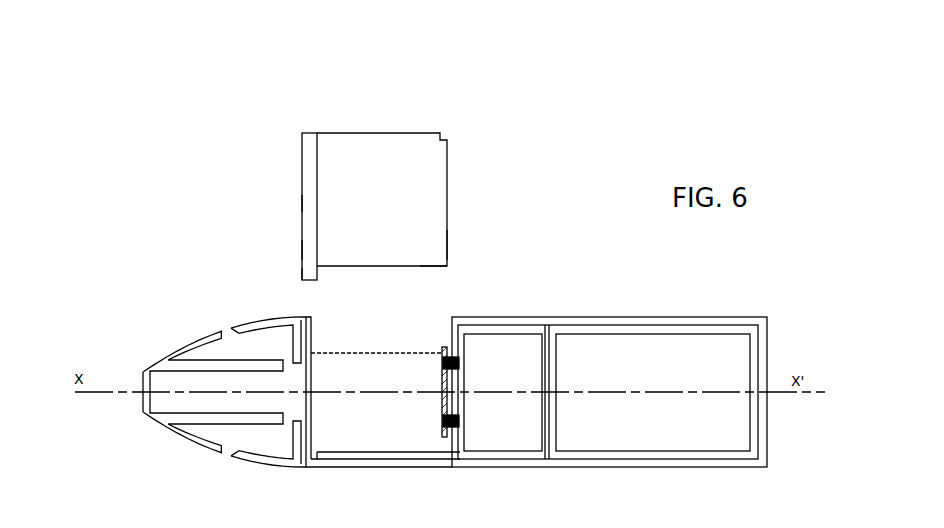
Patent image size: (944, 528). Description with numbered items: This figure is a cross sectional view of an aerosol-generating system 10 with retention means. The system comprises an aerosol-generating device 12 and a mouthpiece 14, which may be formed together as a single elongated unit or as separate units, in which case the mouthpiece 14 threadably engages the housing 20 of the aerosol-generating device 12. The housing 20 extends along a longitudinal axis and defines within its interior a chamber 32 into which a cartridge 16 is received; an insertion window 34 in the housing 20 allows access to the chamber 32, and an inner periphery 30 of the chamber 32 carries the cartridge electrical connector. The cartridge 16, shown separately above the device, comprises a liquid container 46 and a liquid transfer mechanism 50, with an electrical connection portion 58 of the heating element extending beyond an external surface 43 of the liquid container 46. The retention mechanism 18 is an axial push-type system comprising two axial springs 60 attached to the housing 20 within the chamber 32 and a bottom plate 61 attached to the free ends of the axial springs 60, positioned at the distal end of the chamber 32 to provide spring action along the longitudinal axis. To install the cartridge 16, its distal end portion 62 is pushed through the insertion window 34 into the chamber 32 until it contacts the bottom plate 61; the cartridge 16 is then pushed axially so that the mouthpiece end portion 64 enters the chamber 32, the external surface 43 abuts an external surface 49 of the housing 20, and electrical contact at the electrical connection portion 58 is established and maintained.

The aerosol-generating system 10 is at (162, 280).
The aerosol-generating device 12 is at (290, 470).
The mouthpiece 14 is at (192, 337).
The cartridge 16 is at (299, 182).
The retention mechanism 18 is at (436, 372).
The housing 20 is at (605, 317).
The inner periphery 30 is at (350, 452).
The chamber 32 is at (392, 424).
The insertion window 34 is at (357, 350).
The external surface 43 is at (433, 265).
The liquid container 46 is at (447, 160).
The external surface 49 is at (542, 316).
The liquid transfer mechanism 50 is at (302, 202).
The electrical connection portion 58 is at (302, 275).
The axial springs 60 is at (459, 358).
The bottom plate 61 is at (438, 422).
The distal end portion 62 is at (452, 243).
The mouthpiece end portion 64 is at (300, 249).